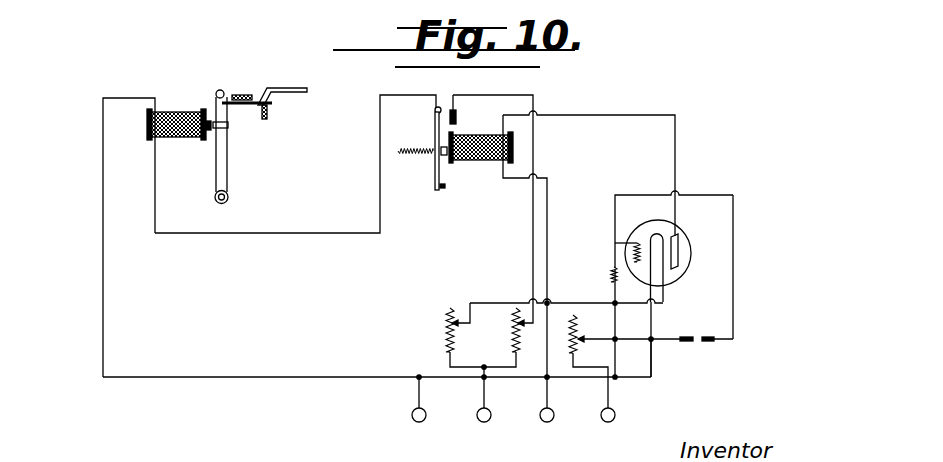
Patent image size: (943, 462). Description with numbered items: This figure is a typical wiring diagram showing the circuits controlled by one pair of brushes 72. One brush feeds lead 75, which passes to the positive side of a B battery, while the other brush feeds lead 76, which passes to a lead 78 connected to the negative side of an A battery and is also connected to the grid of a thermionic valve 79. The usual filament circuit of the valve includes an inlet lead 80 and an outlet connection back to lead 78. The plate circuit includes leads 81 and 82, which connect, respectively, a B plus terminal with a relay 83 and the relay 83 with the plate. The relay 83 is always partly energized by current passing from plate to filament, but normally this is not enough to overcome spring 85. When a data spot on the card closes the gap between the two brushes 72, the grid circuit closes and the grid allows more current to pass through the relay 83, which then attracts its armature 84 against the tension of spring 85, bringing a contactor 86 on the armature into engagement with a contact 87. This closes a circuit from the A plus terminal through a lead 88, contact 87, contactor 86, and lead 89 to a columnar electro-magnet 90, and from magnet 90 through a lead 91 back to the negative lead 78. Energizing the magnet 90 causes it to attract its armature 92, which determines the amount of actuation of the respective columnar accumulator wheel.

The brushes 72 is at (709, 334).
The lead 75 is at (662, 341).
The lead 76 is at (733, 322).
The lead 78 is at (465, 380).
The thermionic valve 79 is at (678, 258).
The inlet lead 80 is at (570, 302).
The lead 81 is at (548, 245).
The lead 82 is at (600, 115).
The relay 83 is at (478, 163).
The armature 84 is at (434, 188).
The spring 85 is at (412, 158).
The contactor 86 is at (432, 108).
The contact 87 is at (457, 118).
The lead 88 is at (534, 98).
The lead 89 is at (268, 234).
The columnar electro-magnet 90 is at (178, 108).
The lead 91 is at (103, 288).
The armature 92 is at (229, 127).